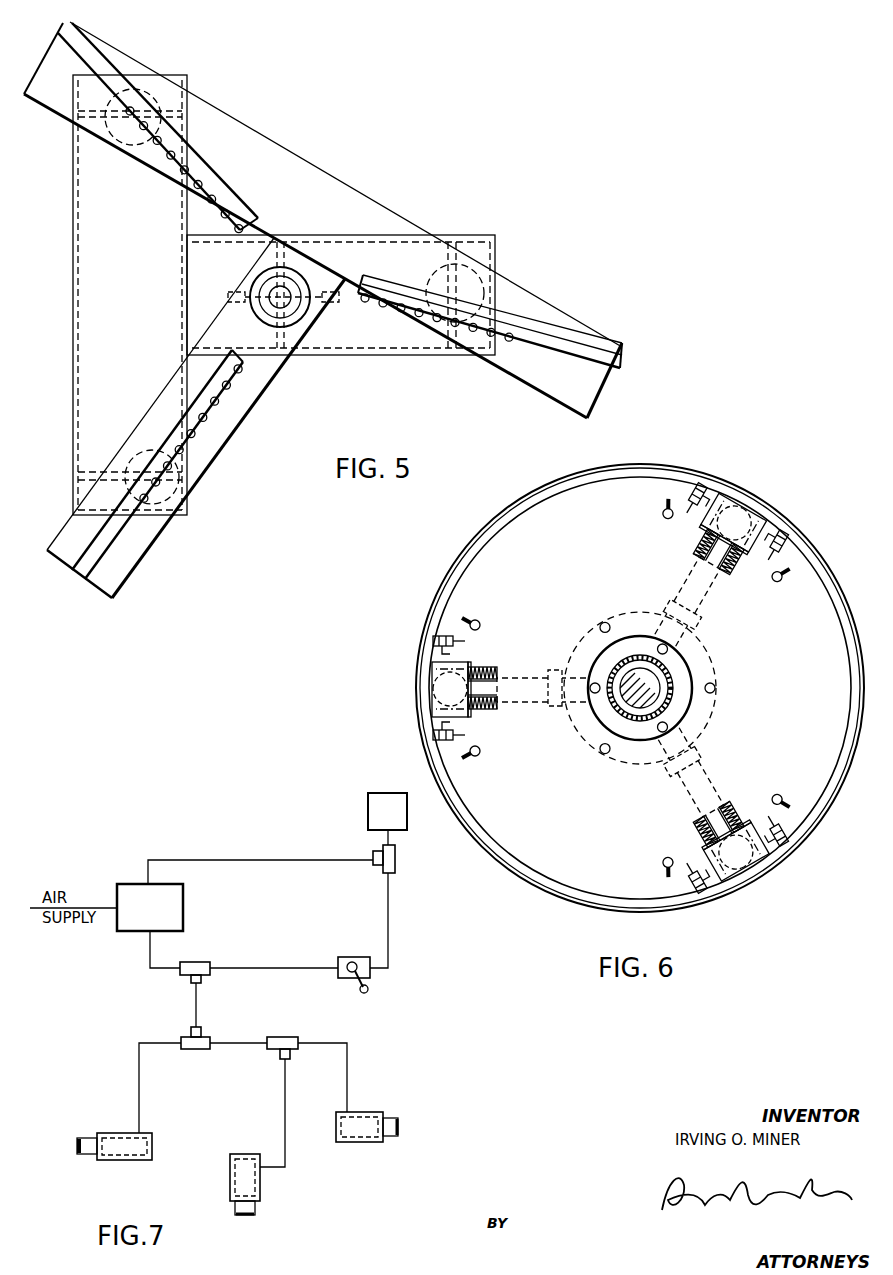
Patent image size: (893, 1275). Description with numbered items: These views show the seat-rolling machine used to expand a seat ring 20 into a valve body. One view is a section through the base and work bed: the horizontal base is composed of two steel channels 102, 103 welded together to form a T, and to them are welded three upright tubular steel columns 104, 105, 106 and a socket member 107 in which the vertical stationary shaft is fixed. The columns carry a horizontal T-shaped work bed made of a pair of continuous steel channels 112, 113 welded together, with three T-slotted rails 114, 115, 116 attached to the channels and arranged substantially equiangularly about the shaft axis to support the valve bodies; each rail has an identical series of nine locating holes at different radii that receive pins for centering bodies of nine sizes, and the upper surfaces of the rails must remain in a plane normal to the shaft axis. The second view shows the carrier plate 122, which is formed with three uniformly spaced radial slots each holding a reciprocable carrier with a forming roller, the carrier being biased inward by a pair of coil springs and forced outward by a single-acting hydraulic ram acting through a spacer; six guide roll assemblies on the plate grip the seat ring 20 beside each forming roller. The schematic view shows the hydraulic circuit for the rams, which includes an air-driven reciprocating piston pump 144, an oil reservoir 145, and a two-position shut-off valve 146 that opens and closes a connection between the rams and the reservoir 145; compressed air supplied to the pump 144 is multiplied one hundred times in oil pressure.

In FIG. 6, the seat ring 20 is at (436, 614).
In FIG. 5, the steel channel 102 is at (472, 235).
In FIG. 5, the steel channel 103 is at (72, 386).
In FIG. 5, the upright tubular steel column 104 is at (190, 85).
In FIG. 5, the upright tubular steel column 105 is at (146, 447).
In FIG. 5, the upright tubular steel column 106 is at (494, 286).
In FIG. 5, the socket member 107 is at (310, 315).
In FIG. 5, the continuous steel channel 112 is at (337, 173).
In FIG. 5, the continuous steel channel 113 is at (216, 459).
In FIG. 5, the T-slotted rail 114 is at (214, 162).
In FIG. 5, the T-slotted rail 115 is at (172, 428).
In FIG. 5, the T-slotted rail 116 is at (384, 278).
In FIG. 6, the carrier plate 122 is at (463, 582).
In FIG. 7, the pump 144 is at (186, 918).
In FIG. 7, the oil reservoir 145 is at (368, 803).
In FIG. 7, the shut-off valve 146 is at (350, 957).